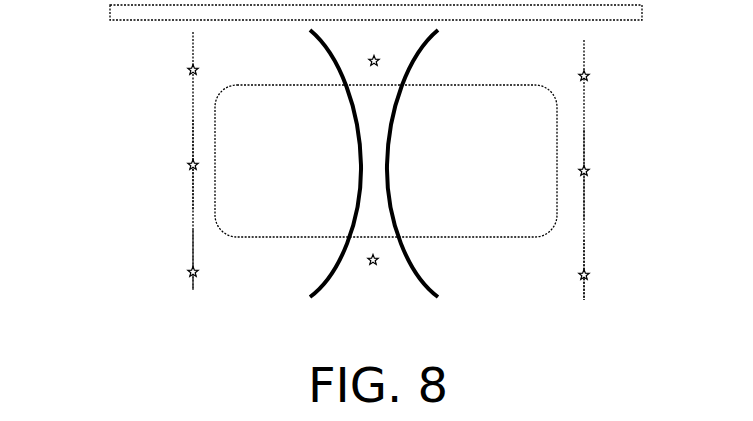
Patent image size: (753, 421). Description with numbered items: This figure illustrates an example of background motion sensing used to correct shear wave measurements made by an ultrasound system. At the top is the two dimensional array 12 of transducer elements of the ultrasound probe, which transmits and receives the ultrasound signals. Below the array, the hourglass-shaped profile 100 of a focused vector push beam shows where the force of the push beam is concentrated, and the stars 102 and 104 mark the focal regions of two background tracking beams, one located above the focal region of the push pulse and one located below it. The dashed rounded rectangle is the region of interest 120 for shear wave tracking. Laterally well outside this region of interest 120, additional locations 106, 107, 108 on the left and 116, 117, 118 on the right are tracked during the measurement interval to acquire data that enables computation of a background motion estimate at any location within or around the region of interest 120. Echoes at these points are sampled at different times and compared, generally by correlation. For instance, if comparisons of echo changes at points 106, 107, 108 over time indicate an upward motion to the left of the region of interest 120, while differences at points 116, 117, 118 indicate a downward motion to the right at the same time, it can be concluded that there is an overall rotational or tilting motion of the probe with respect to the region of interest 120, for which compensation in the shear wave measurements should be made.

The two dimensional array 12 is at (110, 13).
The profile of a vector push beam 100 is at (338, 267).
The focal region of a background tracking beam 102 is at (368, 61).
The focal region of a background tracking beam 104 is at (375, 267).
The additional tracking location 106 is at (188, 70).
The additional tracking location 107 is at (188, 165).
The additional tracking location 108 is at (188, 272).
The additional tracking location 116 is at (590, 75).
The additional tracking location 117 is at (590, 170).
The additional tracking location 118 is at (590, 275).
The region of interest 120 is at (558, 125).